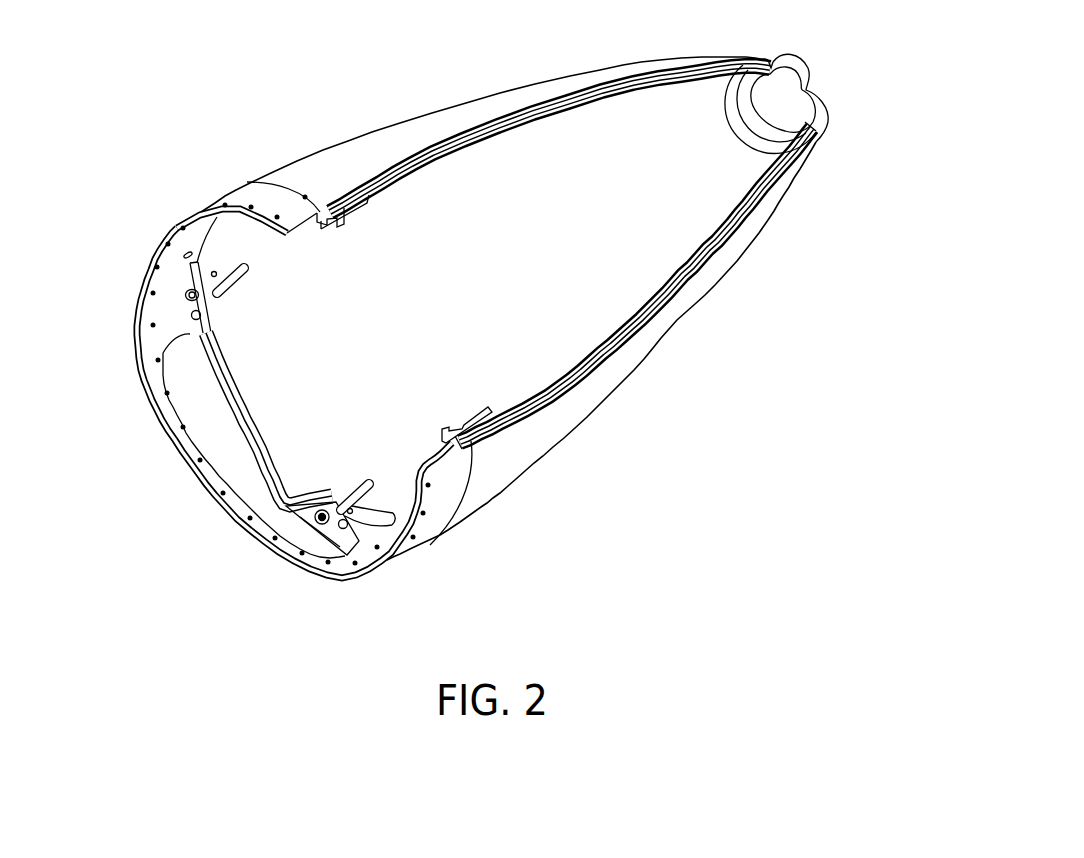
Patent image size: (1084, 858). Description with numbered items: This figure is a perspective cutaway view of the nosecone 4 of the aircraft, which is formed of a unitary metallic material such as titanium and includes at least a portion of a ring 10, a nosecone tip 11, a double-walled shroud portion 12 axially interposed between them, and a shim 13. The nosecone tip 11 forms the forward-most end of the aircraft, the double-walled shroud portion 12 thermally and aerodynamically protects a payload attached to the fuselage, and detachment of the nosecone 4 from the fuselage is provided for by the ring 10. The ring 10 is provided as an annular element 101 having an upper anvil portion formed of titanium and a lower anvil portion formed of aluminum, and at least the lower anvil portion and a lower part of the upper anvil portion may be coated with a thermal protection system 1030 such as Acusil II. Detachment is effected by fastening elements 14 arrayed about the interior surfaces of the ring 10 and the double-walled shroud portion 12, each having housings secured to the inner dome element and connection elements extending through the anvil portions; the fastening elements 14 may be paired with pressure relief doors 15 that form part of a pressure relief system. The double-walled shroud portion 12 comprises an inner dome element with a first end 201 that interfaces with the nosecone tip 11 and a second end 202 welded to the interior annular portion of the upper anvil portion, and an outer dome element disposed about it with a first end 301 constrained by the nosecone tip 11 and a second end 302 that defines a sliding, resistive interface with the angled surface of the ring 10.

The nosecone 4 is at (438, 104).
The ring 10 is at (243, 194).
The annular element 101 is at (265, 352).
The thermal protection system 1030 is at (445, 492).
The nosecone tip 11 is at (810, 80).
The double-walled shroud portion 12 is at (677, 320).
The shim 13 is at (770, 60).
The fastening elements 14 is at (188, 295).
The pressure relief doors 15 is at (200, 317).
The first end 201 is at (773, 148).
The second end 202 is at (481, 428).
The first end 301 is at (815, 145).
The second end 302 is at (492, 436).